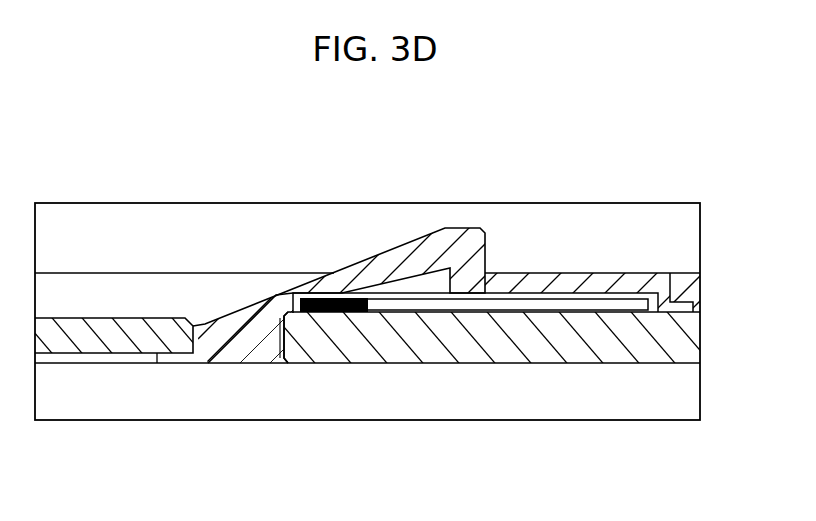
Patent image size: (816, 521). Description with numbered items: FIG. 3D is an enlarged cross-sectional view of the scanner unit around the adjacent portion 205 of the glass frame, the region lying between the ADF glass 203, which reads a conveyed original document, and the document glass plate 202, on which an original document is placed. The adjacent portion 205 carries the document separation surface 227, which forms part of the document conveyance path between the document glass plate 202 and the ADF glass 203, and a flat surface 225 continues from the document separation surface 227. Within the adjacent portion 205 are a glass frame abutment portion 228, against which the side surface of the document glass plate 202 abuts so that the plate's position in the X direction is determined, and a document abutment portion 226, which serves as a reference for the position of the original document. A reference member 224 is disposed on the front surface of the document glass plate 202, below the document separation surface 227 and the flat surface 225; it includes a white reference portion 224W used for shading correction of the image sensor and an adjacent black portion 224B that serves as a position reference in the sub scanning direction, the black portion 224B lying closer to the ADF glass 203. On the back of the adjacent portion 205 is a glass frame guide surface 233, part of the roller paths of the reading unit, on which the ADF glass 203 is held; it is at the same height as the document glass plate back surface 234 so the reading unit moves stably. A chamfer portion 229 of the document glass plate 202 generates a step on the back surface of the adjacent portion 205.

The document glass plate 202 is at (702, 300).
The ADF glass 203 is at (96, 340).
The adjacent portion 205 is at (252, 342).
The reference member 224 is at (585, 303).
The black portion 224B is at (320, 297).
The white reference portion 224W is at (534, 296).
The flat surface 225 is at (515, 273).
The document abutment portion 226 is at (680, 302).
The document separation surface 227 is at (380, 254).
The glass frame abutment portion 228 is at (285, 315).
The chamfer portion 229 is at (283, 365).
The glass frame guide surface 233 is at (188, 350).
The document glass plate back surface 234 is at (515, 365).